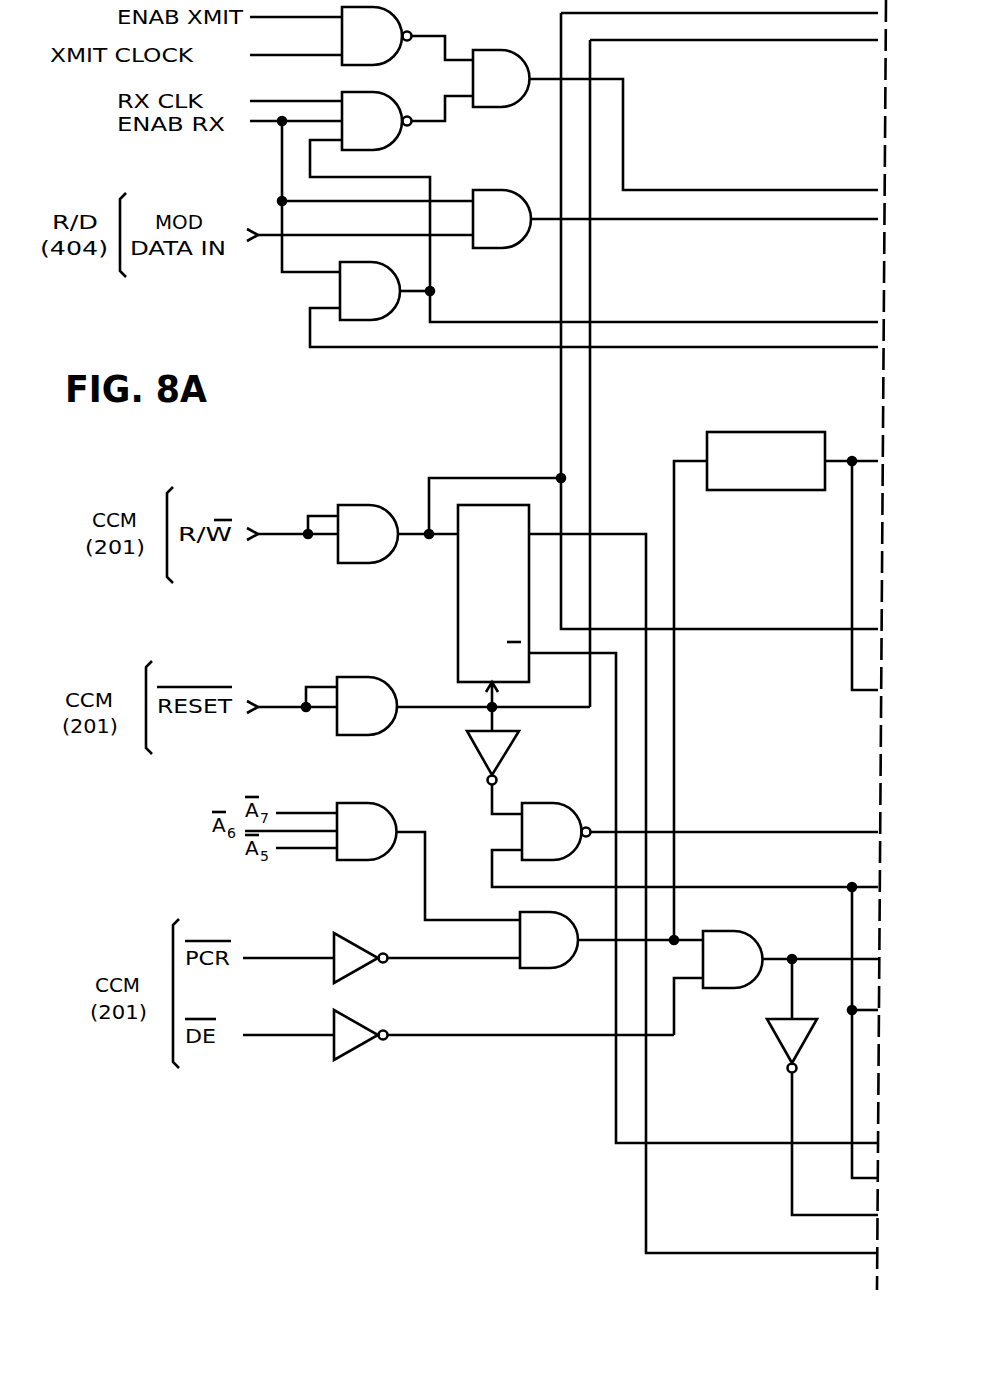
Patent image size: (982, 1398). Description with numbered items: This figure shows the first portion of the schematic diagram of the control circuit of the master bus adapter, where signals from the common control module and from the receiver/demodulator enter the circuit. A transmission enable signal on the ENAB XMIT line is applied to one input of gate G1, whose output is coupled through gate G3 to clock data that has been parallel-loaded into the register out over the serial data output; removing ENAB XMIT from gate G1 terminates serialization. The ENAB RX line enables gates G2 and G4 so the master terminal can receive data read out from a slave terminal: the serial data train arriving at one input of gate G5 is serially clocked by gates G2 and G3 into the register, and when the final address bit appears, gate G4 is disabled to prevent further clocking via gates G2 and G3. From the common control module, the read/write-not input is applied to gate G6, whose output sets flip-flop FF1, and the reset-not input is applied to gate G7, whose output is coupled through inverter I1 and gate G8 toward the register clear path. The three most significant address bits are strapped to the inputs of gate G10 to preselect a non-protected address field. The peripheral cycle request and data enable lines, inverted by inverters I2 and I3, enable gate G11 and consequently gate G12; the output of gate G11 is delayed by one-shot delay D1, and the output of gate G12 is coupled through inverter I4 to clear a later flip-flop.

The gate G1 is at (407, 36).
The gate G2 is at (407, 121).
The gate G3 is at (675, 120).
The gate G4 is at (385, 291).
The gate G5 is at (675, 219).
The gate G6 is at (398, 534).
The gate G7 is at (463, 706).
The gate G8 is at (685, 847).
The gate G10 is at (428, 861).
The gate G11 is at (611, 940).
The gate G12 is at (776, 983).
The flip-flop FF1 is at (668, 879).
The one-shot delay D1 is at (776, 432).
The inverter I1 is at (497, 752).
The inverter I2 is at (350, 963).
The inverter I3 is at (352, 1040).
The inverter I4 is at (787, 1043).